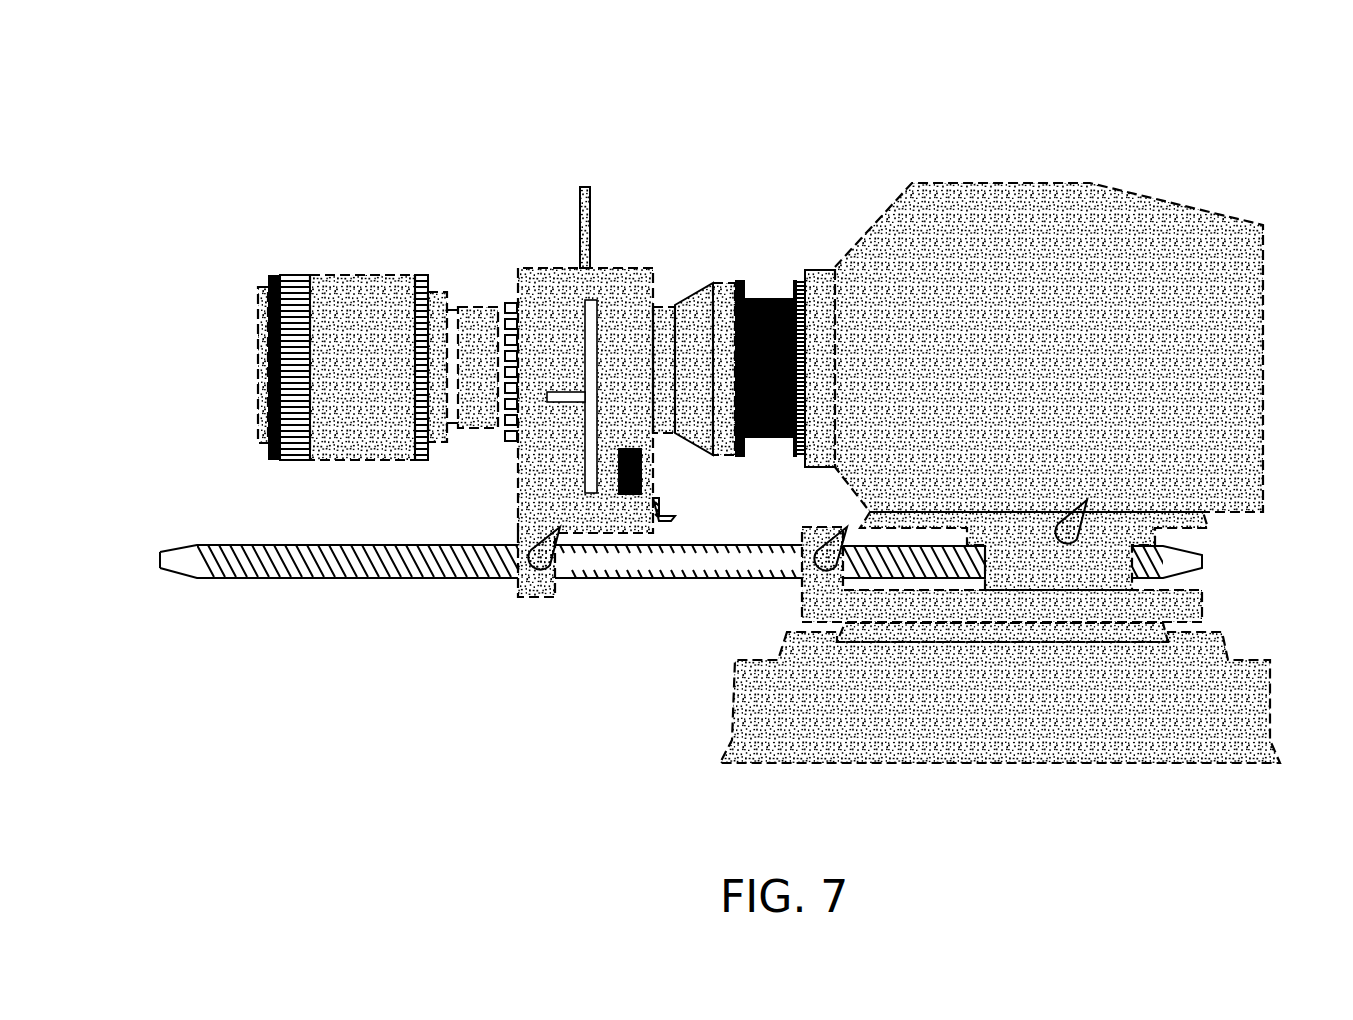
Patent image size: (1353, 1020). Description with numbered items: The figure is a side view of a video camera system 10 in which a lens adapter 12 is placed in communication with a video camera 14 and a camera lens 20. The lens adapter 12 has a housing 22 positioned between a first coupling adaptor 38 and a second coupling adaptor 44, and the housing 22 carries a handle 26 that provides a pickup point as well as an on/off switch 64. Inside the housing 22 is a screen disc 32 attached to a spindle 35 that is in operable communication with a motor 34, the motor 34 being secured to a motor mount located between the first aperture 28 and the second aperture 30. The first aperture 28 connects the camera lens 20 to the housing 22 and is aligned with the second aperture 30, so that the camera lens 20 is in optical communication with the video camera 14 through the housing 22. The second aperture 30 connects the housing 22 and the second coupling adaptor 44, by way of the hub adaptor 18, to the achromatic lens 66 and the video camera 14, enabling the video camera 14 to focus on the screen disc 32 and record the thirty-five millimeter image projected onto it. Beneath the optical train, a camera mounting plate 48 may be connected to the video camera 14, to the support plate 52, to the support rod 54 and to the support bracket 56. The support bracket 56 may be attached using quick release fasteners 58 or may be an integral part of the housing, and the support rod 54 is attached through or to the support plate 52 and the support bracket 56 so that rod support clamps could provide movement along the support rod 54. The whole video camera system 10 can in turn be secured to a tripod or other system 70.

The video camera system 10 is at (122, 210).
The lens adapter 12 is at (808, 86).
The video camera 14 is at (1017, 212).
The hub adaptor 18 is at (707, 323).
The camera lens 20 is at (332, 287).
The mounting block 22 is at (604, 277).
The handle 26 is at (585, 187).
The first aperture 28 is at (520, 297).
The second aperture 30 is at (665, 323).
The screen disc 32 is at (590, 485).
The motor 34 is at (642, 465).
The spindle 35 is at (560, 405).
The first coupling adaptor 38 is at (470, 318).
The second coupling adaptor 44 is at (665, 323).
The camera mounting plate 48 is at (1195, 522).
The support plate 52 is at (1183, 607).
The support rod 54 is at (245, 577).
The support bracket 56 is at (513, 588).
The quick release fasteners 58 is at (547, 590).
The on/off switch 64 is at (665, 518).
The achromatic lens 66 is at (772, 298).
The tripod or other system 70 is at (1095, 733).